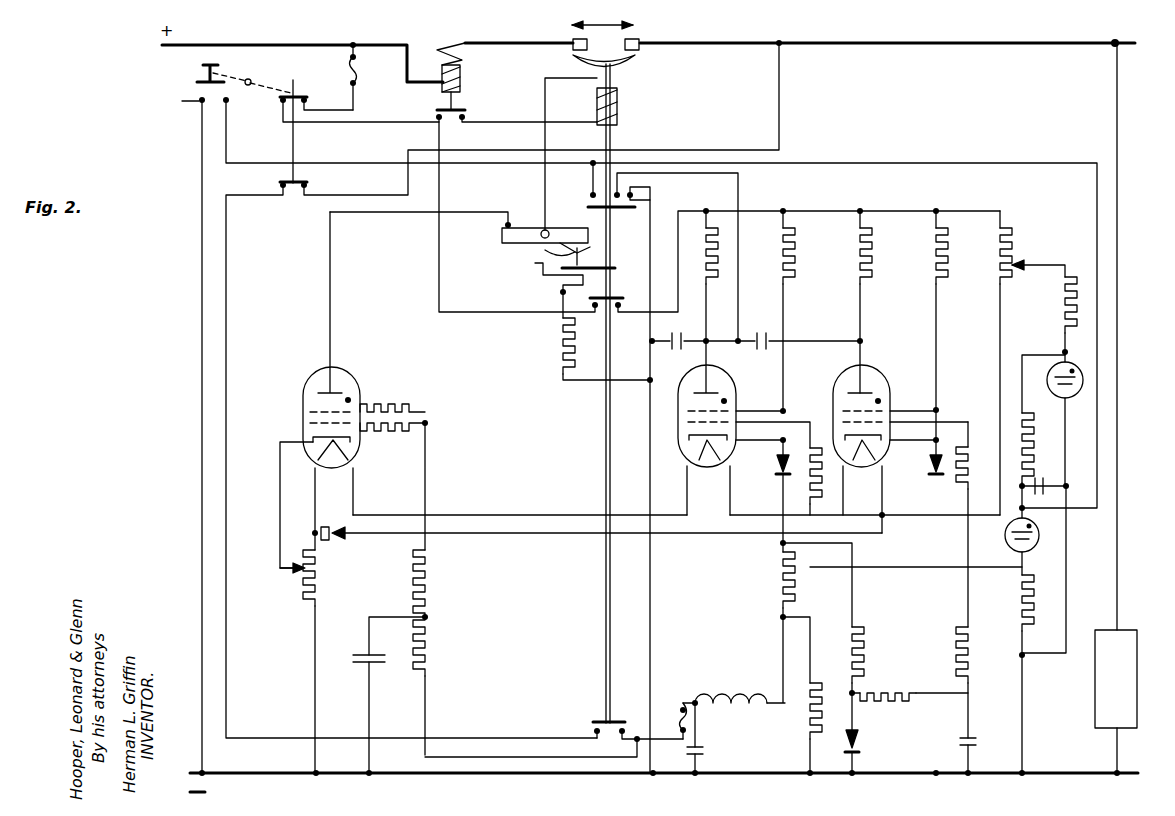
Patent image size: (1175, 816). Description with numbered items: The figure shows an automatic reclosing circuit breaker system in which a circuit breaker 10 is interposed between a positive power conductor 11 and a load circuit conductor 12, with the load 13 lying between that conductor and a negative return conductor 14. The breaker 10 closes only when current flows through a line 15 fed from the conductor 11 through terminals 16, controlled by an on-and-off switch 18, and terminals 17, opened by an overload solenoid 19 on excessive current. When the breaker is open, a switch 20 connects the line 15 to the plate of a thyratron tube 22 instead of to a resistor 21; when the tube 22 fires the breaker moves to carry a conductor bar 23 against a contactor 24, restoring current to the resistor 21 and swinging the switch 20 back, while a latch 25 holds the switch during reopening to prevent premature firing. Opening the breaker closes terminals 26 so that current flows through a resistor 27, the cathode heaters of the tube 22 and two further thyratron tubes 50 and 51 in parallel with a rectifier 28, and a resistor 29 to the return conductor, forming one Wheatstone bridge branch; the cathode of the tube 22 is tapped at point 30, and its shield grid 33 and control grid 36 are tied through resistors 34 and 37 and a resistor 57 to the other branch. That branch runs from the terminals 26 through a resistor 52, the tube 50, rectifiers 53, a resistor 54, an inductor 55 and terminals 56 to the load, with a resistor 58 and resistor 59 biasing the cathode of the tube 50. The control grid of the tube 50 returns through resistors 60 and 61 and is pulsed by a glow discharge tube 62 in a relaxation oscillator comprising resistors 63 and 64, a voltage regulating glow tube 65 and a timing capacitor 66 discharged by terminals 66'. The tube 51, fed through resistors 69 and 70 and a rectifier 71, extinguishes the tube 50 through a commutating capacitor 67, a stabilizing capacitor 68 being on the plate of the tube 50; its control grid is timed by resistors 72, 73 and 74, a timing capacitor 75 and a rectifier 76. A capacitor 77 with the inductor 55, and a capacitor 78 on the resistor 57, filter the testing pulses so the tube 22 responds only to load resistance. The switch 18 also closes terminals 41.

The circuit breaker 10 is at (637, 58).
The positive power conductor 11 is at (383, 44).
The load circuit conductor 12 is at (872, 43).
The load 13 is at (1107, 685).
The negative return conductor 14 is at (740, 774).
The line 15 is at (545, 92).
The terminals 16 is at (308, 99).
The terminals 17 is at (437, 111).
The on-and-off switch 18 is at (250, 78).
The overload solenoid 19 is at (462, 74).
The switch 20 is at (552, 228).
The resistor 21 is at (562, 348).
The thyratron tube 22 is at (405, 361).
The conductor bar 23 is at (602, 268).
The contactor 24 is at (552, 257).
The latch 25 is at (537, 271).
The terminals 26 is at (614, 298).
The resistor 27 is at (1014, 250).
The selenium-type rectifier 28 is at (332, 541).
The resistor 29 is at (318, 582).
The intermediate point 30 is at (296, 572).
The shield grid 33 is at (305, 412).
The resistor 34 is at (394, 404).
The control grid 36 is at (305, 424).
The resistor 37 is at (394, 432).
The terminals 41 is at (178, 101).
The thyratron tube 50 is at (780, 381).
The thyratron tube 51 is at (933, 381).
The resistor 52 is at (720, 262).
The selenium-type rectifiers 53 is at (777, 467).
The resistor 54 is at (784, 570).
The inductor 55 is at (722, 698).
The terminals 56 is at (590, 724).
The resistor 57 is at (430, 582).
The resistor 58 is at (797, 262).
The resistor 59 is at (808, 718).
The resistor 60 is at (823, 488).
The resistor 61 is at (1037, 595).
The glow discharge tube 62 is at (1040, 538).
The resistor 63 is at (1064, 309).
The timing resistor 64 is at (1020, 425).
The voltage regulating glow discharge tube 65 is at (1084, 380).
The timing capacitor 66 is at (1087, 474).
The terminals 66' is at (664, 192).
The commutating capacitor 67 is at (762, 333).
The stabilizing capacitor 68 is at (676, 351).
The resistor 69 is at (874, 262).
The resistor 70 is at (950, 262).
The selenium-type rectifier 71 is at (930, 465).
The resistor 72 is at (970, 662).
The resistor 73 is at (920, 682).
The resistor 74 is at (866, 652).
The timing capacitor 75 is at (978, 740).
The selenium-type rectifier 76 is at (862, 742).
The capacitor 77 is at (707, 752).
The capacitor 78 is at (355, 660).